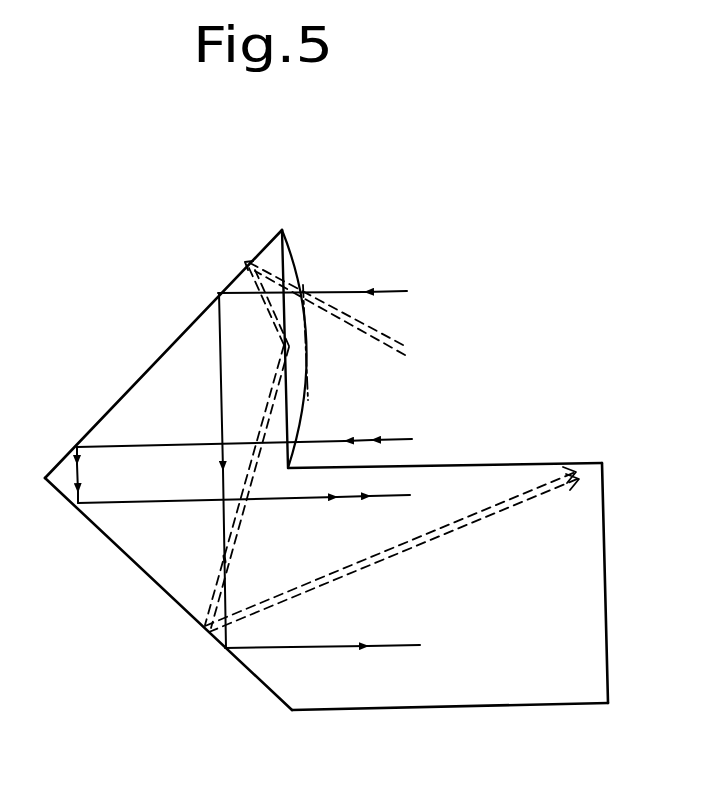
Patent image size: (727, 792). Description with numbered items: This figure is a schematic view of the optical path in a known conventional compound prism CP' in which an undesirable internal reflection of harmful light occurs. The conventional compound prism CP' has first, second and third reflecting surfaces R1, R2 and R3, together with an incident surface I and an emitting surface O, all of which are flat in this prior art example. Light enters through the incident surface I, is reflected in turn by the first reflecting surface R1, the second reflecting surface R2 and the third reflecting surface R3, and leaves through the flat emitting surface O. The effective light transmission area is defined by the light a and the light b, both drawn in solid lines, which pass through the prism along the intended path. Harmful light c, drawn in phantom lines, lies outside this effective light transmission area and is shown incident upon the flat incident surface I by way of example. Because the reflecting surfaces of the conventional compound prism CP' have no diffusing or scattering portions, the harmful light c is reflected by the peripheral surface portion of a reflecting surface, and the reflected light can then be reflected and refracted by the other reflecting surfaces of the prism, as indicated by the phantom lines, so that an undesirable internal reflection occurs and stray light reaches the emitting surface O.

The conventional compound prism CP' is at (356, 511).
The first reflecting surface R1 is at (125, 393).
The second reflecting surface R2 is at (147, 575).
The third reflecting surface R3 is at (515, 643).
The emitting surface O is at (582, 563).
The light a is at (380, 293).
The light b is at (390, 438).
The harmful light c is at (387, 323).
The incident surface I is at (323, 353).